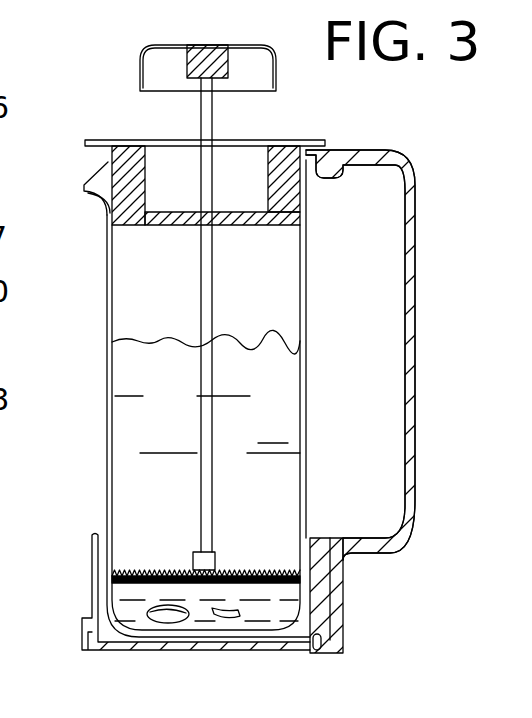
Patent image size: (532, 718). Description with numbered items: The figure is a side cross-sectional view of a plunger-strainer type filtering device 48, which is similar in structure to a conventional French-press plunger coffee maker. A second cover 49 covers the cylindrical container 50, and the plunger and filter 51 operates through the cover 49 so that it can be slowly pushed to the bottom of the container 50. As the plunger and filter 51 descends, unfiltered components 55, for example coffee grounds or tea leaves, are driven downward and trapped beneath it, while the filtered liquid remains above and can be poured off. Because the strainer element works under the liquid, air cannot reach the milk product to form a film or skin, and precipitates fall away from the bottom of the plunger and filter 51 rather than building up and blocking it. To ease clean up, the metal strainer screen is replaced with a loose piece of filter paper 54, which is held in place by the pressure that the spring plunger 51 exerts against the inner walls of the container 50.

The plunger-strainer type filtering device 48 is at (110, 110).
The second cover 49 is at (297, 145).
The cylindrical container 50 is at (105, 305).
The plunger and filter 51 is at (163, 553).
The filter paper 54 is at (113, 560).
The unfiltered components 55 is at (158, 612).